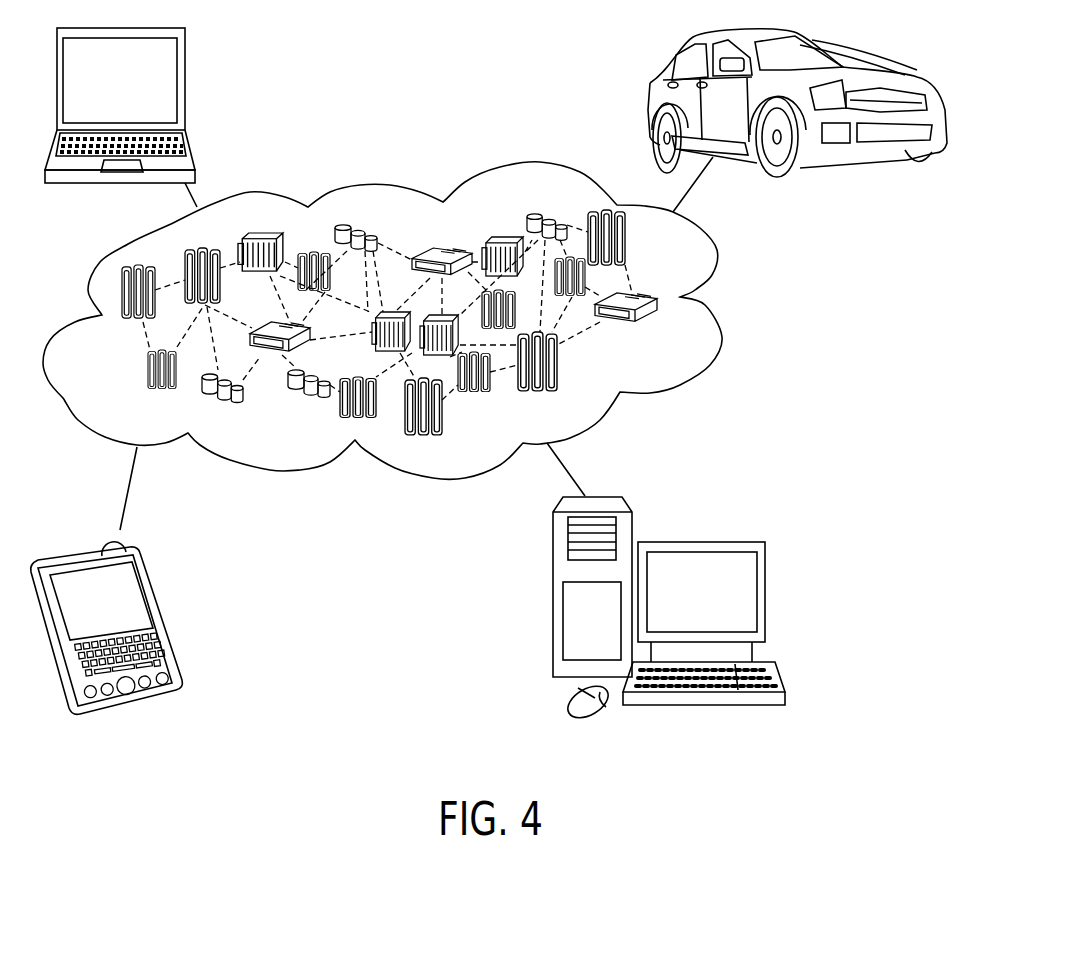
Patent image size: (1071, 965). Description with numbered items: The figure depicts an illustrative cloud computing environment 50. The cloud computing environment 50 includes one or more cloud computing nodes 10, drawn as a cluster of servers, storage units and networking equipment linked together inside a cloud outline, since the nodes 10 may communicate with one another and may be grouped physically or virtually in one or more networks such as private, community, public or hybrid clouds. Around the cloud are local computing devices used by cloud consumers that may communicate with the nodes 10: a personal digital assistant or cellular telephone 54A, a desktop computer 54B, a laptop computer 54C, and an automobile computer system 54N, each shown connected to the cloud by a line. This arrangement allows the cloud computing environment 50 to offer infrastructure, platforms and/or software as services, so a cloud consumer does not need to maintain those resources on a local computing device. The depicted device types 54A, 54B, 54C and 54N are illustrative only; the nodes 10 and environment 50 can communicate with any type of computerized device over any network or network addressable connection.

The cloud computing nodes 10 is at (681, 352).
The cloud computing environment 50 is at (718, 250).
The personal digital assistant (PDA) or cellular telephone 54A is at (153, 592).
The desktop computer 54B is at (767, 590).
The laptop computer 54C is at (185, 82).
The automobile computer system 54N is at (833, 50).